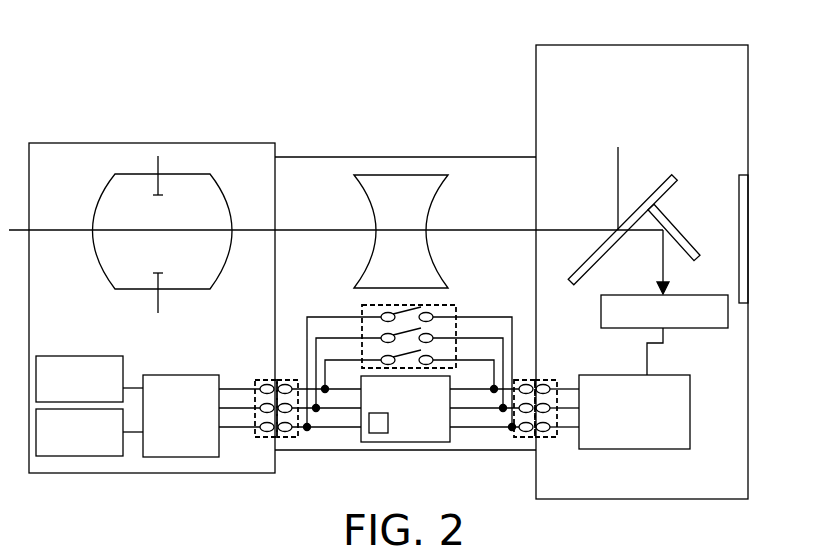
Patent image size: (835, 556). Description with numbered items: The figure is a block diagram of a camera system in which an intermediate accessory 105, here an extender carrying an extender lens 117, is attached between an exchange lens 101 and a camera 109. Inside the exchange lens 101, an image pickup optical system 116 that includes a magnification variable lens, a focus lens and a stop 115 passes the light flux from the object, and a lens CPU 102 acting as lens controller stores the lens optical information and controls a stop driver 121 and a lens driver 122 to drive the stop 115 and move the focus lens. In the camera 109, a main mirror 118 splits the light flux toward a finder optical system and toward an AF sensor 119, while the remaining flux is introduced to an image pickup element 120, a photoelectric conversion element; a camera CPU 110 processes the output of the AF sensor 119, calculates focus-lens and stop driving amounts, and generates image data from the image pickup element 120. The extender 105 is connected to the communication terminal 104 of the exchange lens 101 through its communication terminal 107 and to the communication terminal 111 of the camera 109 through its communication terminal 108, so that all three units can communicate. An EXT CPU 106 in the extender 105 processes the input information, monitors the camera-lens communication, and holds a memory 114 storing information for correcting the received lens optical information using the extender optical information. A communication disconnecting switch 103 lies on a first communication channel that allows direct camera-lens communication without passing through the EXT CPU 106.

The exchange lens 101 is at (83, 143).
The lens CPU 102 is at (201, 416).
The communication disconnecting switch 103 is at (442, 165).
The communication terminal 104 is at (265, 380).
The intermediate accessory 105 is at (306, 155).
The EXT CPU 106 is at (405, 409).
The communication terminal 107 is at (273, 378).
The communication terminal 108 is at (528, 375).
The camera 109 is at (559, 57).
The camera CPU 110 is at (620, 412).
The communication terminal 111 is at (543, 377).
The memory 114 is at (380, 428).
The stop 115 is at (159, 173).
The image pickup optical system 116 is at (103, 198).
The extender lens 117 is at (414, 218).
The main mirror 118 is at (673, 177).
The AF sensor 119 is at (682, 328).
The image pickup element 120 is at (748, 210).
The stop driver 121 is at (70, 353).
The lens driver 122 is at (63, 455).